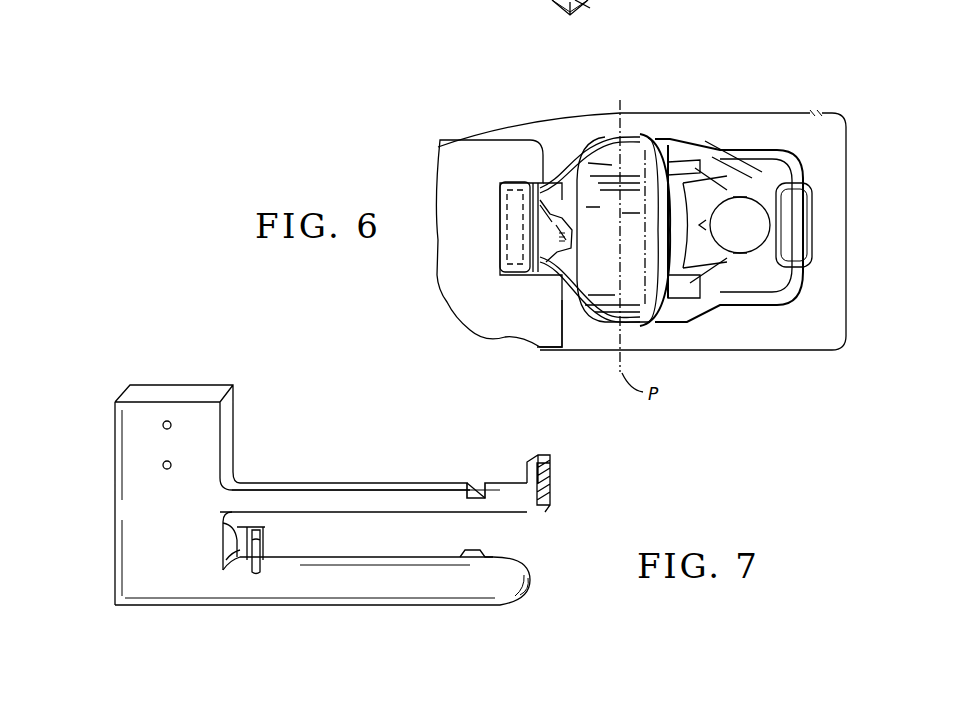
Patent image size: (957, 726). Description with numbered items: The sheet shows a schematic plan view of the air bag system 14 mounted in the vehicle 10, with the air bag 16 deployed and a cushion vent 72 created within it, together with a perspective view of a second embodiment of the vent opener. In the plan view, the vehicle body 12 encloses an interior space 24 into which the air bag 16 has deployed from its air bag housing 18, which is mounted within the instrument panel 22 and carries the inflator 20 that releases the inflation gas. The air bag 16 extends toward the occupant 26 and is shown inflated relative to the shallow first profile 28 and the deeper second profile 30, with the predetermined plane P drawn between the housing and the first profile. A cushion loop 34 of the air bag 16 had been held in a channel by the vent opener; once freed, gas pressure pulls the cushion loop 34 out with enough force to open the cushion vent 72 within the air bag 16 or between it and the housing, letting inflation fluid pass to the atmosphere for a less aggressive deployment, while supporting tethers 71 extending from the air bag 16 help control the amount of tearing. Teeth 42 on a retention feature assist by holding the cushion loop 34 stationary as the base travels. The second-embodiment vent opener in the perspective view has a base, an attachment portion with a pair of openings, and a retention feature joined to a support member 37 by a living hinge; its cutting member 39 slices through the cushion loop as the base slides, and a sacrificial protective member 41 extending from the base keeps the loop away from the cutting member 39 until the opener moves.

In FIG. 6, the vehicle 10 is at (757, 33).
In FIG. 6, the vehicle body 12 is at (846, 130).
In FIG. 6, the air bag system 14 is at (564, 134).
In FIG. 6, the air bag 16 is at (660, 307).
In FIG. 6, the air bag housing 18 is at (500, 188).
In FIG. 6, the inflator 20 is at (500, 243).
In FIG. 6, the instrument panel 22 is at (510, 163).
In FIG. 6, the interior space 24 is at (728, 322).
In FIG. 6, the occupant 26 is at (758, 178).
In FIG. 6, the first profile 28 is at (672, 160).
In FIG. 6, the second profile 30 is at (705, 152).
In FIG. 6, the cushion loop 34 is at (532, 348).
In FIG. 6, the supporting tethers 71 is at (520, 276).
In FIG. 6, the cushion vent 72 is at (550, 190).
In FIG. 7, the support member 37 is at (352, 483).
In FIG. 7, the cutting member 39 is at (233, 562).
In FIG. 7, the protective member 41 is at (263, 550).
In FIG. 7, the teeth 42 is at (551, 478).